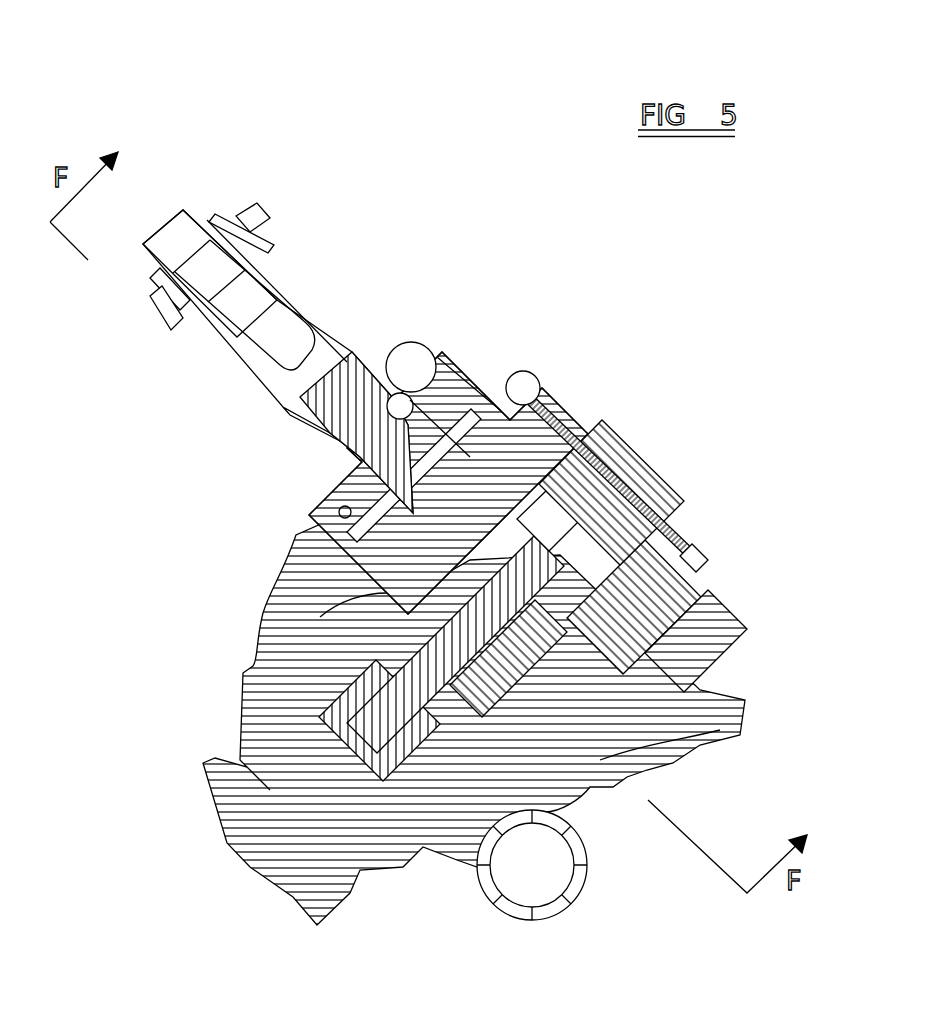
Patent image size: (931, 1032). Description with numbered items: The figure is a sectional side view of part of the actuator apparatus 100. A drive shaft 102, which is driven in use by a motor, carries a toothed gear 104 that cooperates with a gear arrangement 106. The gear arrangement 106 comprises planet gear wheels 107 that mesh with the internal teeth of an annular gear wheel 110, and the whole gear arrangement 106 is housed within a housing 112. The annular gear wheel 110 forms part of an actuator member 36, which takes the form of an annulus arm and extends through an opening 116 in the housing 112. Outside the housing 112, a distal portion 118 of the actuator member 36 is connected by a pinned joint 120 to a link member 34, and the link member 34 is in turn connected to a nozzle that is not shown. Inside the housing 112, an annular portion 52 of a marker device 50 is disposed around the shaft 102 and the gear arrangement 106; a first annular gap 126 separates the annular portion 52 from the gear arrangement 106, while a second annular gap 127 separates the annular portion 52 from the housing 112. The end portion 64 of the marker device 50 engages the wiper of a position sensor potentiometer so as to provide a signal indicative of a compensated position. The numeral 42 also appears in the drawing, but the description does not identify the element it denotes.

The link member 34 is at (165, 225).
The distal portion 118 is at (232, 216).
The pinned joint 120 is at (150, 308).
The actuator member 36 is at (327, 350).
The opening 116 is at (340, 443).
The marker device 50 is at (360, 500).
The annular portion 52 is at (448, 483).
The second annular gap 127 is at (340, 510).
The first annular gap 126 is at (290, 573).
The drive shaft 102 is at (457, 650).
The housing 112 is at (252, 665).
The gear arrangement 106 is at (567, 427).
The planet gear wheels 107 is at (709, 483).
The toothed gear 104 is at (637, 507).
The annular gear wheel 110 is at (700, 603).
The block 42 is at (700, 713).
The end portion 64 is at (673, 763).
The actuator apparatus 100 is at (545, 300).